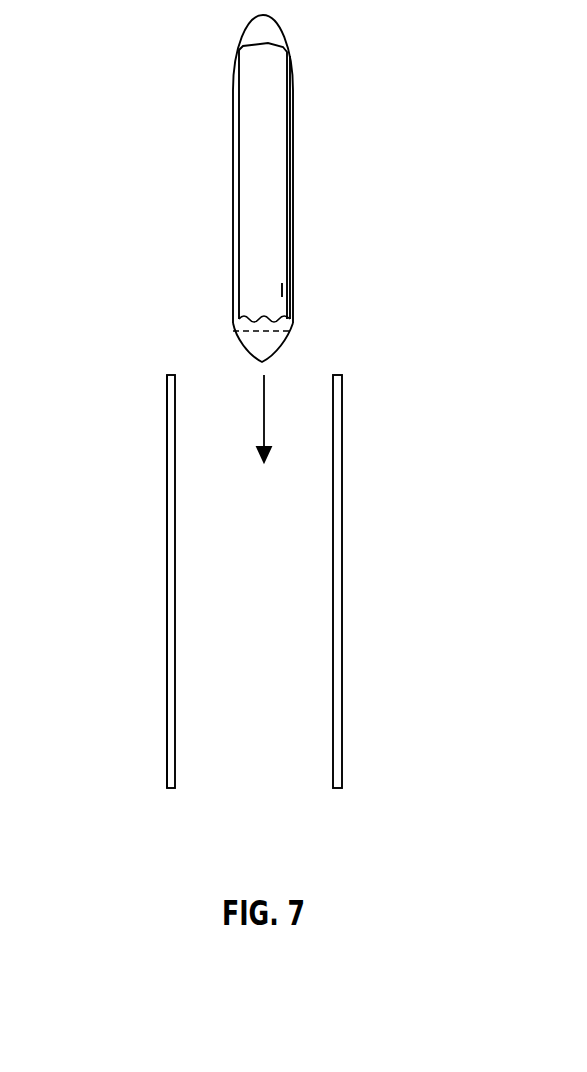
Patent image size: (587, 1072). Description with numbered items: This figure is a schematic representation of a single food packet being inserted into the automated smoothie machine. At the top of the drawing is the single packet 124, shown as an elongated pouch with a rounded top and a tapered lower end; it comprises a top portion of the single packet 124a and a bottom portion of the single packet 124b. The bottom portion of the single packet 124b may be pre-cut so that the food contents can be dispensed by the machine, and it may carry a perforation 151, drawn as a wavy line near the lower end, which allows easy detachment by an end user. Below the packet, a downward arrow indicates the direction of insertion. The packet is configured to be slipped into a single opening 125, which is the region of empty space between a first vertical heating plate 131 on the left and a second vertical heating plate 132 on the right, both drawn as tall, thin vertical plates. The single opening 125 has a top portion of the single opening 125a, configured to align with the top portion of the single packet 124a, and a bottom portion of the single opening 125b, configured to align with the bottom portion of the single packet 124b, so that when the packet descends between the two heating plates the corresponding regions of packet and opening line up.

The single packet 124 is at (247, 194).
The top portion of a single packet 124a is at (247, 77).
The bottom portion of a single packet 124b is at (258, 347).
The perforation 151 is at (267, 330).
The single opening 125 is at (228, 583).
The top portion of a single opening 125a is at (230, 436).
The bottom portion of a single opening 125b is at (228, 716).
The first vertical heating plate 131 is at (167, 558).
The second vertical heating plate 132 is at (342, 542).